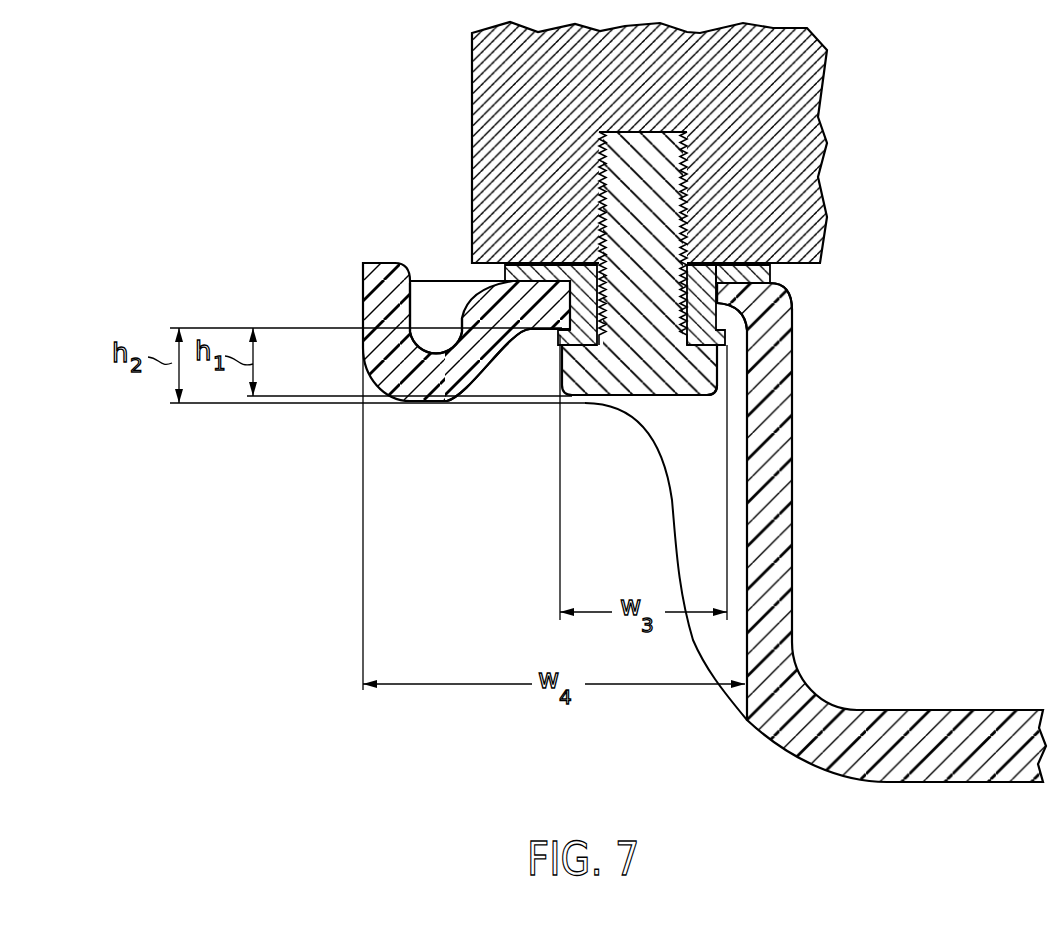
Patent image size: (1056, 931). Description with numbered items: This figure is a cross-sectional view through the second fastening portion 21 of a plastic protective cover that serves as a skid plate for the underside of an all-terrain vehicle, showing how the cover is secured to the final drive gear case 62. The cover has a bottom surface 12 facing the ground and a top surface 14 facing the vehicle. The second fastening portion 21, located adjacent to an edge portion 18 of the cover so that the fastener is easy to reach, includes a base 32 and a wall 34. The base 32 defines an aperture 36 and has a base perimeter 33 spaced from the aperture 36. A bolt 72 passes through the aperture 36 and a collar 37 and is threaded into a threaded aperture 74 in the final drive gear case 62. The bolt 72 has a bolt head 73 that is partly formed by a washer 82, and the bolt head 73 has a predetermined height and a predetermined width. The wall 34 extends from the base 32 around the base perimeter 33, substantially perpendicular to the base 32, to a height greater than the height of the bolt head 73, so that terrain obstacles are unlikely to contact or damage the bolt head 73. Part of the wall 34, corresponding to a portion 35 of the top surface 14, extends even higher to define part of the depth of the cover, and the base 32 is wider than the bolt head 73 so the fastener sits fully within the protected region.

The bottom surface 12 is at (963, 787).
The top surface 14 is at (968, 710).
The edge portion 18 is at (340, 278).
The second fastening portion 21 is at (308, 525).
The base 32 is at (548, 340).
The base perimeter 33 is at (523, 340).
The wall 34 is at (440, 403).
The portion of the top surface 35 is at (792, 487).
The aperture 36 is at (760, 322).
The collar 37 is at (777, 276).
The final drive gear case 62 is at (437, 55).
The bolt 72 is at (637, 437).
The bolt head 73 is at (681, 412).
The threaded aperture 74 is at (575, 192).
The washer 82 is at (582, 338).